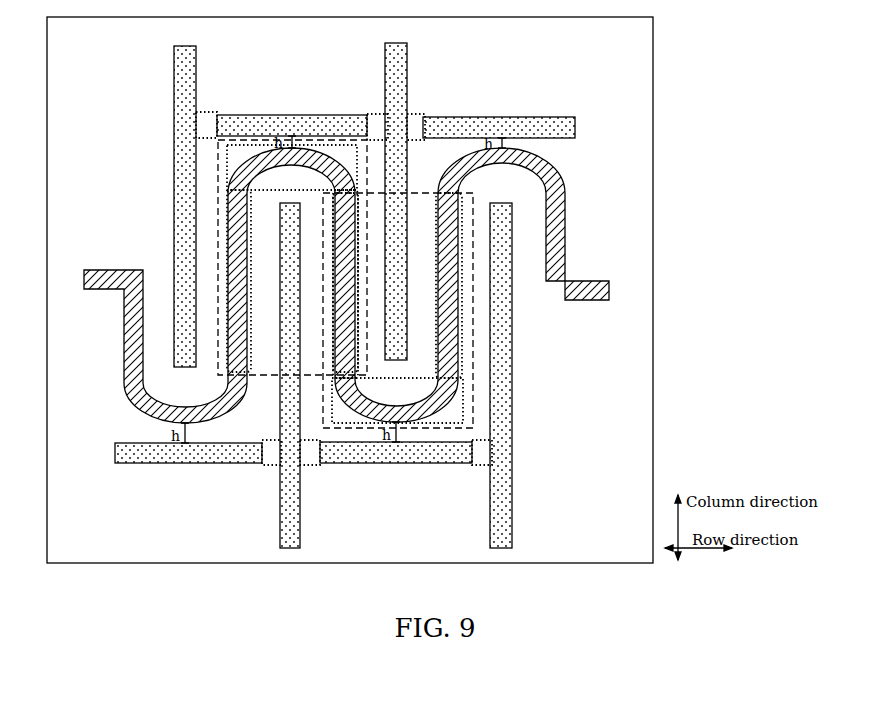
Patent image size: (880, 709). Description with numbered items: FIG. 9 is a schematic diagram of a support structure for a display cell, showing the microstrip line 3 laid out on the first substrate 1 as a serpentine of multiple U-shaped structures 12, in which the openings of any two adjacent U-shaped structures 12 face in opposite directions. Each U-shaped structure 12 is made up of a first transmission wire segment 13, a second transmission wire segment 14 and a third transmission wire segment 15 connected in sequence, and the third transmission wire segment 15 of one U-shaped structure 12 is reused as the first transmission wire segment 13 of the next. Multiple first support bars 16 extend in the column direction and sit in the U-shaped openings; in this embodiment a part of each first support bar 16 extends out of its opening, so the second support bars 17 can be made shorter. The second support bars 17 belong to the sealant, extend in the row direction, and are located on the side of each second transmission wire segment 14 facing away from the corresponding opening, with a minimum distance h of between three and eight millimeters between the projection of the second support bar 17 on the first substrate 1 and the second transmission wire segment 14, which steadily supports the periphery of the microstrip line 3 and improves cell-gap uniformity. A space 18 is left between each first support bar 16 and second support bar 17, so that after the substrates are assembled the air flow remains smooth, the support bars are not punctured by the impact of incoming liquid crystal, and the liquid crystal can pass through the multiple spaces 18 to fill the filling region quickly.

The first substrate 1 is at (55, 217).
The microstrip line 3 is at (84, 278).
The U-shaped structure 12 is at (367, 138).
The first transmission wire segment 13 is at (237, 375).
The second transmission wire segment 14 is at (290, 145).
The third transmission wire segment 15 is at (345, 382).
The first support bar 16 is at (174, 160).
The second support bar 17 is at (255, 125).
The space 18 is at (213, 112).